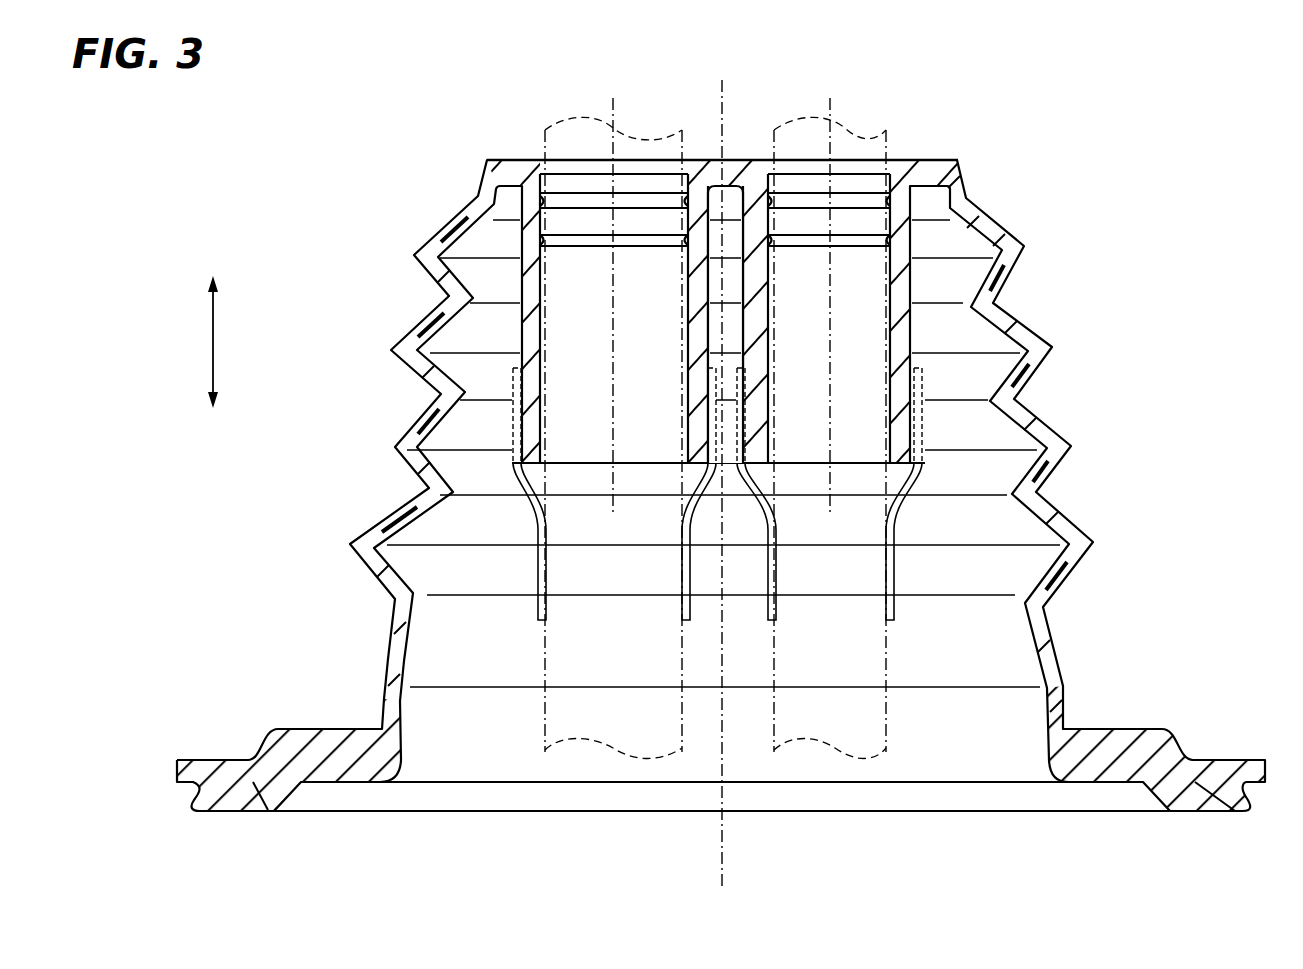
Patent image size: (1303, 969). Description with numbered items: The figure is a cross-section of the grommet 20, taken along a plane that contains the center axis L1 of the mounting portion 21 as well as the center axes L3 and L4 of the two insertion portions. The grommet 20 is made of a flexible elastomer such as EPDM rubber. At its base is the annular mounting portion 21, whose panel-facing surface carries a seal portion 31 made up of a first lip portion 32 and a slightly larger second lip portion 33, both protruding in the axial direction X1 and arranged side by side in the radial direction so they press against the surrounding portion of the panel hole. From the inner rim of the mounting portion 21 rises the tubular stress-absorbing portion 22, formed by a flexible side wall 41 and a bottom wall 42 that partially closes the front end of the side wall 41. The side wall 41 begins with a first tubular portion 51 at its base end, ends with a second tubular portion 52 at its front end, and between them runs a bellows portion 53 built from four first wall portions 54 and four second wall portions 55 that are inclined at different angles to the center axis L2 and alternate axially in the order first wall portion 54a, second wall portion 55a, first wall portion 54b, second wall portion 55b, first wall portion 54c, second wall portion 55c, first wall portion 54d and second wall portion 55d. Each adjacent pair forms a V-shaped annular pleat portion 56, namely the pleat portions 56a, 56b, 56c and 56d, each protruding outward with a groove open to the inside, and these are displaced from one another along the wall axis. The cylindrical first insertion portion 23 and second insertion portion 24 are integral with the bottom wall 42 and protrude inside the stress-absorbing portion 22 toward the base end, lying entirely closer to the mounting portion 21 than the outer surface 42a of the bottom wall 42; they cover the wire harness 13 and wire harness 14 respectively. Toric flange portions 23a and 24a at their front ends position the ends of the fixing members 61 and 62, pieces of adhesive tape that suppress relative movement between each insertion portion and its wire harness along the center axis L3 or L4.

The wire harness 13 is at (540, 725).
The wire harness 14 is at (885, 726).
The grommet 20 is at (712, 496).
The mounting portion 21 is at (721, 799).
The stress-absorbing portion 22 is at (1053, 641).
The first insertion portion 23 is at (682, 328).
The flange portion 23a is at (512, 456).
The second insertion portion 24 is at (864, 328).
The flange portion 24a is at (918, 456).
The seal portion 31 is at (759, 849).
The first lip portion 32 is at (1166, 795).
The second lip portion 33 is at (1133, 876).
The side wall 41 is at (1066, 471).
The bottom wall 42 is at (735, 160).
The outer surface 42a is at (937, 162).
The first tubular portion 51 is at (1056, 696).
The second tubular portion 52 is at (963, 203).
The bellows portion 53 is at (375, 471).
The first wall portions 54 is at (375, 471).
The first wall portion 54a is at (393, 591).
The first wall portion 54b is at (385, 480).
The first wall portion 54c is at (405, 390).
The first wall portion 54d is at (440, 288).
The second wall portions 55 is at (375, 471).
The second wall portion 55a is at (365, 528).
The second wall portion 55b is at (410, 408).
The second wall portion 55c is at (420, 324).
The second wall portion 55d is at (455, 229).
The pleat portion 56 is at (1066, 471).
The pleat portion 56a is at (1095, 544).
The pleat portion 56b is at (1072, 447).
The pleat portion 56c is at (1052, 350).
The pleat portion 56d is at (1032, 251).
The fixing member 61 is at (538, 578).
The fixing member 62 is at (893, 563).
The center axis L1 is at (725, 858).
The center axis L2 is at (724, 92).
The center axis L3 is at (615, 325).
The center axis L4 is at (832, 325).
The axial direction X1 is at (208, 347).